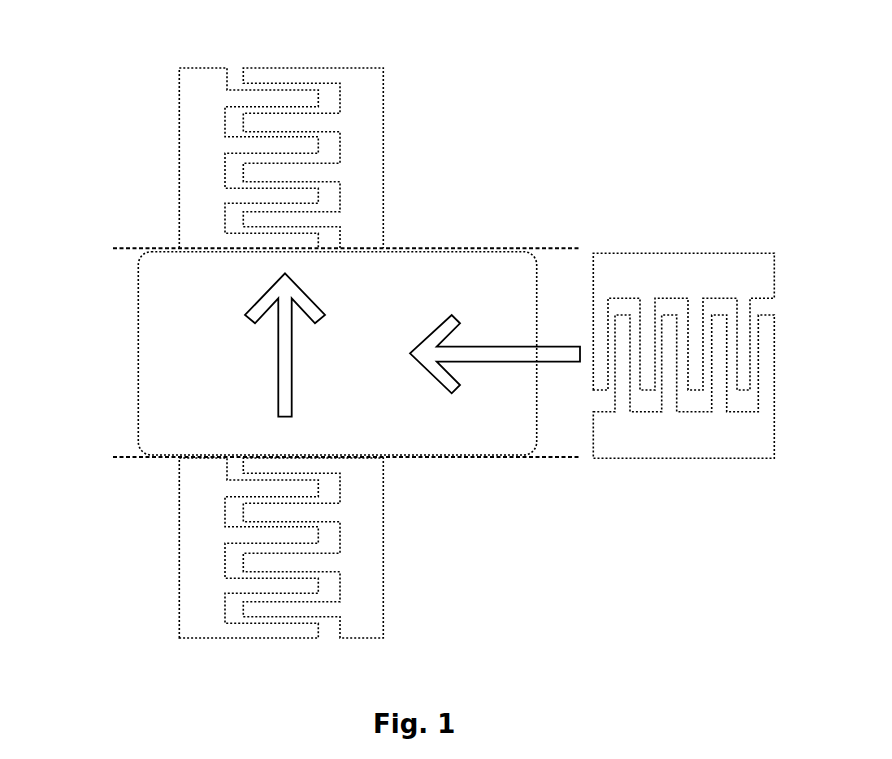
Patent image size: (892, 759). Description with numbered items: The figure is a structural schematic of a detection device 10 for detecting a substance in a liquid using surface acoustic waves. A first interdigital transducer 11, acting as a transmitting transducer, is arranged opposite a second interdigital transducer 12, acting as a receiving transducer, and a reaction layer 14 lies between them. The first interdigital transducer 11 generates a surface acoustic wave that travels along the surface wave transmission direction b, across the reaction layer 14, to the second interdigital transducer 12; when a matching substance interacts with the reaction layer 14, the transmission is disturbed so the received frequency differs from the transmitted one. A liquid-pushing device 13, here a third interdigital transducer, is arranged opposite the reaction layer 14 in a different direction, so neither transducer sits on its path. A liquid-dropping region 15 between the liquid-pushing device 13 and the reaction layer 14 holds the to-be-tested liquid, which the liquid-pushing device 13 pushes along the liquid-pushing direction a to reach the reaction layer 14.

The detection device 10 is at (132, 200).
The first interdigital transducer 11 is at (370, 599).
The second interdigital transducer 12 is at (370, 112).
The liquid-pushing device 13 is at (722, 265).
The reaction layer 14 is at (195, 361).
The liquid-dropping region 15 is at (562, 327).
The liquid-pushing direction a is at (495, 355).
The surface wave transmission direction b is at (282, 343).